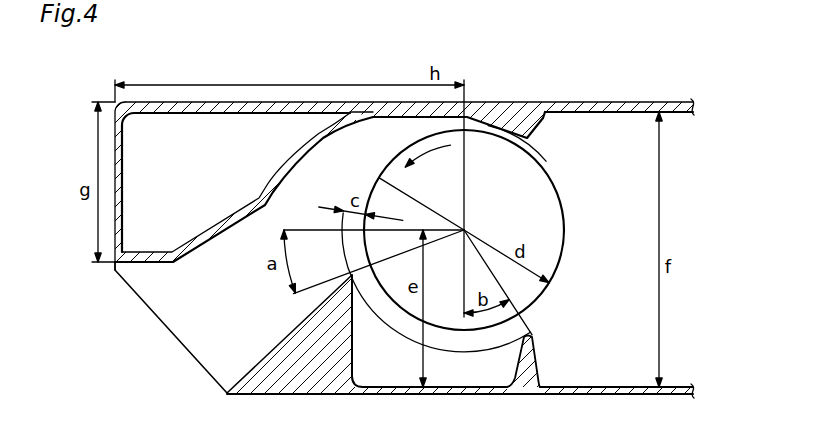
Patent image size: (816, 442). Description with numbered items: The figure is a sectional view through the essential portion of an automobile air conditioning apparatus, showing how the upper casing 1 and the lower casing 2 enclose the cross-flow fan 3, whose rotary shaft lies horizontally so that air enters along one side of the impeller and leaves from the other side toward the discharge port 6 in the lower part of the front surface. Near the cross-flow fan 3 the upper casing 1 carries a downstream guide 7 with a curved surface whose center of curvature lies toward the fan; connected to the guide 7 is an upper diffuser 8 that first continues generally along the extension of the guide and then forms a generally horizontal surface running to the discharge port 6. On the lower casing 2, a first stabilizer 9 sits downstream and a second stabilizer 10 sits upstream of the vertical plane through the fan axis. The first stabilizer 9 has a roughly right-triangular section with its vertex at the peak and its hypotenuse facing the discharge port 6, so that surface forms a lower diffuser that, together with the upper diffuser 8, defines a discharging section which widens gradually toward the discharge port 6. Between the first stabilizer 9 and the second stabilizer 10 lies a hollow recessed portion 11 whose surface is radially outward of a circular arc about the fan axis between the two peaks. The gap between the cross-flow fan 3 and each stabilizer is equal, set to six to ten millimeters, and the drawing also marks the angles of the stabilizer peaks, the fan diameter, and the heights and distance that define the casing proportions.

The upper casing 1 is at (233, 102).
The lower casing 2 is at (627, 395).
The cross-flow fan 3 is at (541, 160).
The discharge port 6 is at (162, 323).
The downstream guide 7 is at (327, 130).
The upper diffuser 8 is at (203, 232).
The first stabilizer 9 is at (300, 358).
The second stabilizer 10 is at (518, 377).
The recessed portion 11 is at (395, 396).